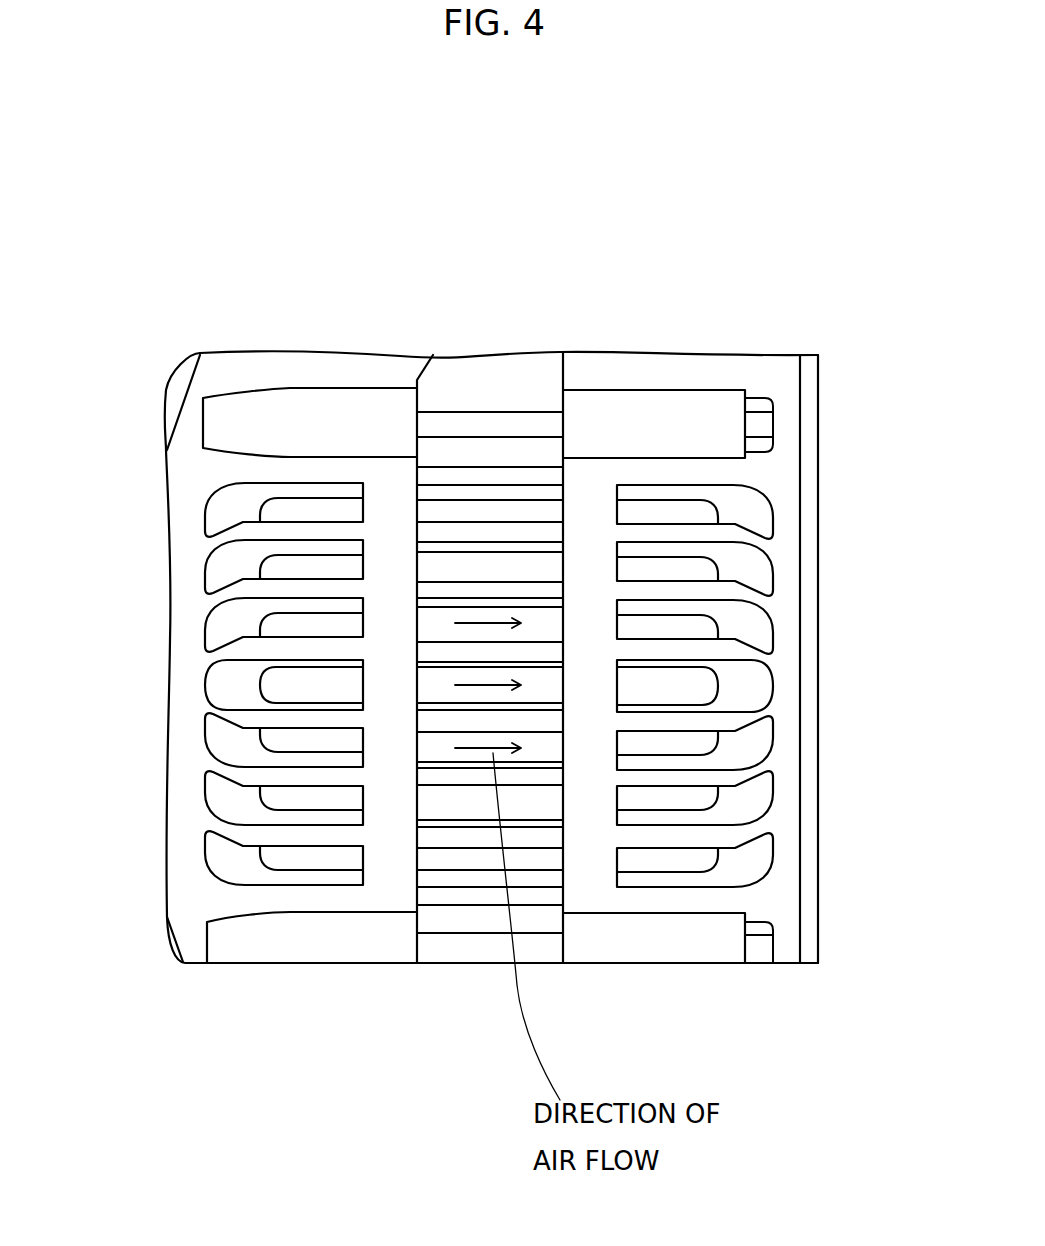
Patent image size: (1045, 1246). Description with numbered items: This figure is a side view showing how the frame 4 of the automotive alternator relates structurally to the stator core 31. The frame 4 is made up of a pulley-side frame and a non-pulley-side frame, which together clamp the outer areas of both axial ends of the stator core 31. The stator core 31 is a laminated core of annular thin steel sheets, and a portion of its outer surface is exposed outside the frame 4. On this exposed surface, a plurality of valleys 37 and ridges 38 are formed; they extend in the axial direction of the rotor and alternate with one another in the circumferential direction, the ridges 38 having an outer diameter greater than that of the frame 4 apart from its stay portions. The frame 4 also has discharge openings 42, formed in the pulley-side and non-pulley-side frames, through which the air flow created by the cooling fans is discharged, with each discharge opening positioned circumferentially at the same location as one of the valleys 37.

The frame 4 is at (312, 367).
The stator core 31 is at (483, 947).
The valleys 37 is at (443, 624).
The ridges 38 is at (540, 598).
The discharge openings 42 is at (307, 857).